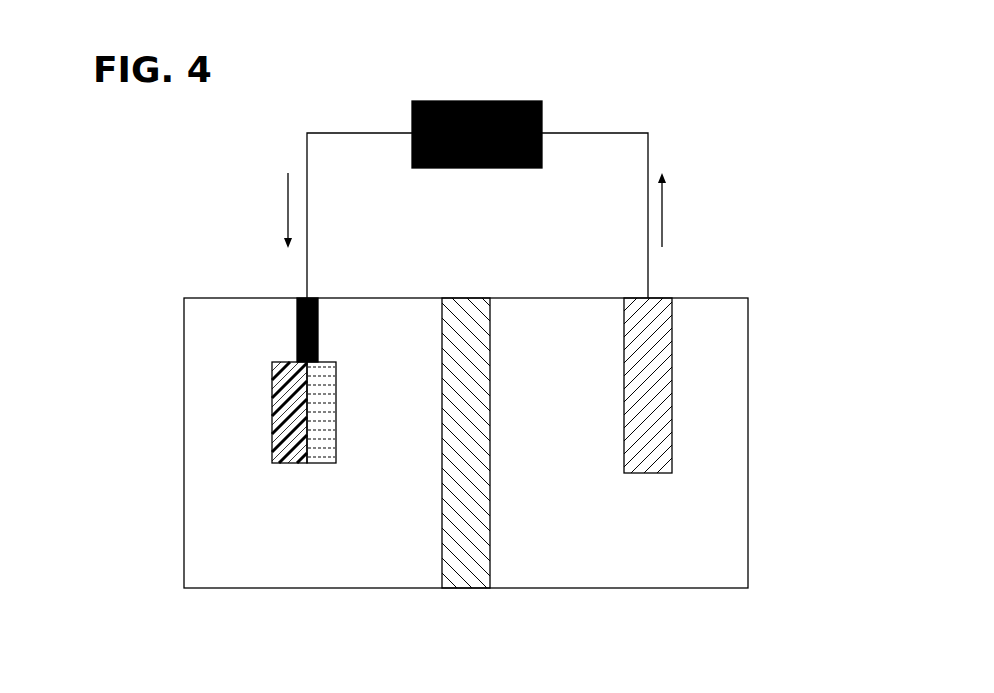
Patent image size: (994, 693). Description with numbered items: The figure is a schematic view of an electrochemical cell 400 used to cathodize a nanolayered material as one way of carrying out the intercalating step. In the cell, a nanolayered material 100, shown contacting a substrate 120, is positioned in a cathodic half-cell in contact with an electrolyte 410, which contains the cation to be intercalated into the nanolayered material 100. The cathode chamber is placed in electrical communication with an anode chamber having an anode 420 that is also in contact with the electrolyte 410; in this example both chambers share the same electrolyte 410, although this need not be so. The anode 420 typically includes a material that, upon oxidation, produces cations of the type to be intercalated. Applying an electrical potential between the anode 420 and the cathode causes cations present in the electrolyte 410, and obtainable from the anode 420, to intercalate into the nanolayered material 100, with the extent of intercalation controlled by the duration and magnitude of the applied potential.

The electrochemical cell 400 is at (109, 205).
The electrolyte 410 is at (207, 527).
The substrate 120 is at (272, 407).
The nanolayered material 100 is at (322, 463).
The anode 420 is at (672, 398).